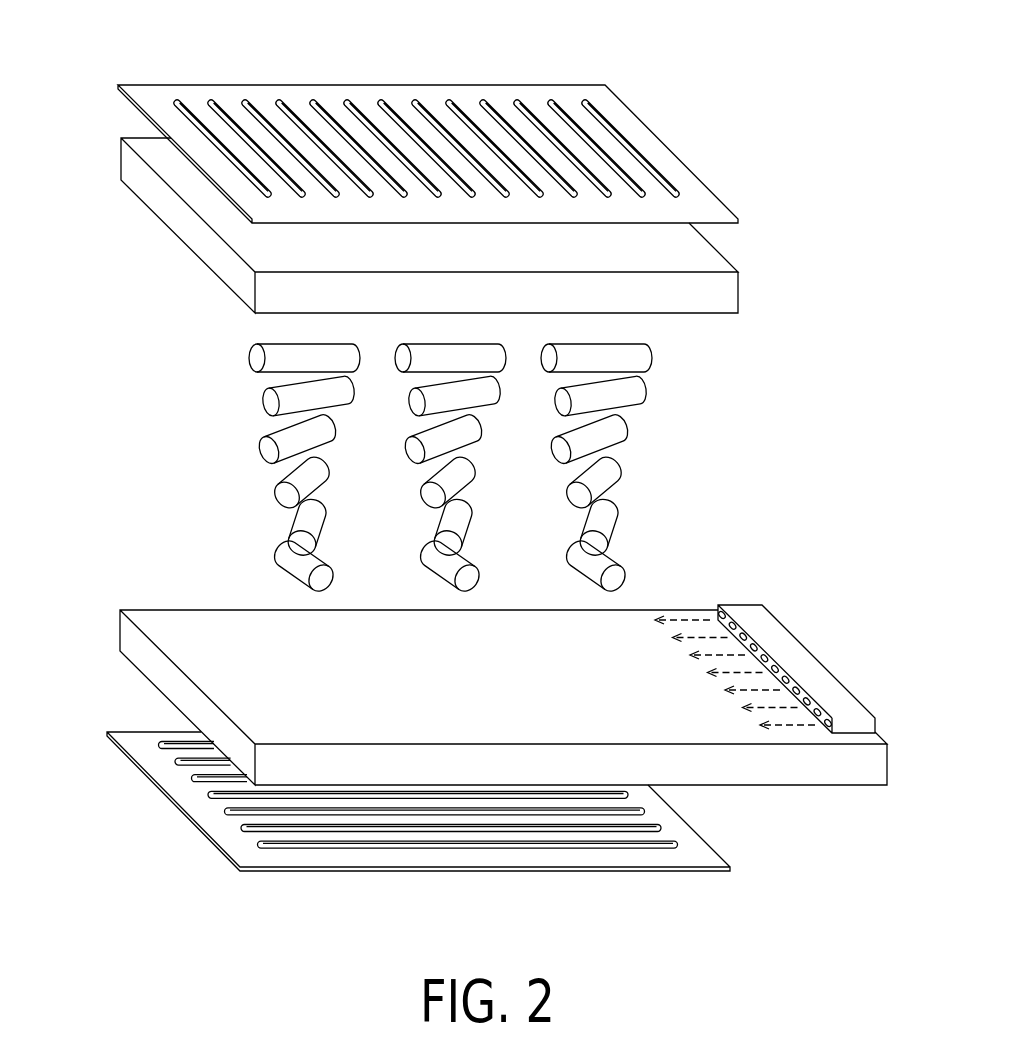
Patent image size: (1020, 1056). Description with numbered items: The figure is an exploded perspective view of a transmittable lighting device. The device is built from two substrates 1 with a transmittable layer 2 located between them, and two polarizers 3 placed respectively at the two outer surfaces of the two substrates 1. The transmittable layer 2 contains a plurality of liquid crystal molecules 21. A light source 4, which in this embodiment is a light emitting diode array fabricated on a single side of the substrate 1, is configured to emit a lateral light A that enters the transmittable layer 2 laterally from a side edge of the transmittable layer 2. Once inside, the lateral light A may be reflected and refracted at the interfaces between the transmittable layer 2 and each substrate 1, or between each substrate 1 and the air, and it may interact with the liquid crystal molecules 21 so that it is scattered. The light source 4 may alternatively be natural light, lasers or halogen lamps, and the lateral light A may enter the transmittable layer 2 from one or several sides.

The substrate 1 is at (717, 258).
The transmittable layer 2 is at (393, 470).
The liquid crystal molecules 21 is at (257, 362).
The polarizer 3 is at (618, 115).
The light source 4 is at (790, 657).
The lateral light A is at (798, 723).